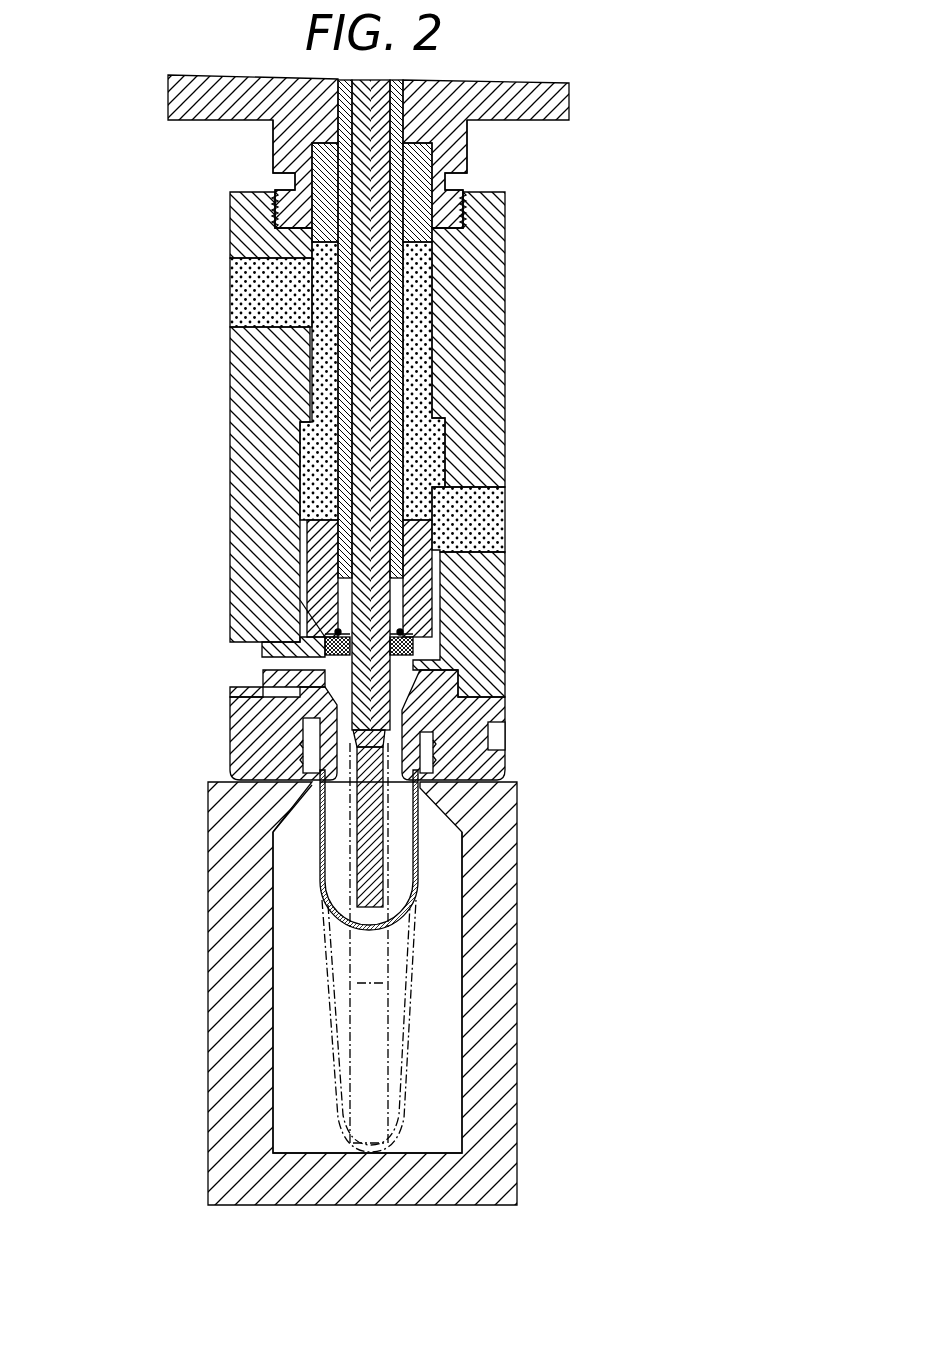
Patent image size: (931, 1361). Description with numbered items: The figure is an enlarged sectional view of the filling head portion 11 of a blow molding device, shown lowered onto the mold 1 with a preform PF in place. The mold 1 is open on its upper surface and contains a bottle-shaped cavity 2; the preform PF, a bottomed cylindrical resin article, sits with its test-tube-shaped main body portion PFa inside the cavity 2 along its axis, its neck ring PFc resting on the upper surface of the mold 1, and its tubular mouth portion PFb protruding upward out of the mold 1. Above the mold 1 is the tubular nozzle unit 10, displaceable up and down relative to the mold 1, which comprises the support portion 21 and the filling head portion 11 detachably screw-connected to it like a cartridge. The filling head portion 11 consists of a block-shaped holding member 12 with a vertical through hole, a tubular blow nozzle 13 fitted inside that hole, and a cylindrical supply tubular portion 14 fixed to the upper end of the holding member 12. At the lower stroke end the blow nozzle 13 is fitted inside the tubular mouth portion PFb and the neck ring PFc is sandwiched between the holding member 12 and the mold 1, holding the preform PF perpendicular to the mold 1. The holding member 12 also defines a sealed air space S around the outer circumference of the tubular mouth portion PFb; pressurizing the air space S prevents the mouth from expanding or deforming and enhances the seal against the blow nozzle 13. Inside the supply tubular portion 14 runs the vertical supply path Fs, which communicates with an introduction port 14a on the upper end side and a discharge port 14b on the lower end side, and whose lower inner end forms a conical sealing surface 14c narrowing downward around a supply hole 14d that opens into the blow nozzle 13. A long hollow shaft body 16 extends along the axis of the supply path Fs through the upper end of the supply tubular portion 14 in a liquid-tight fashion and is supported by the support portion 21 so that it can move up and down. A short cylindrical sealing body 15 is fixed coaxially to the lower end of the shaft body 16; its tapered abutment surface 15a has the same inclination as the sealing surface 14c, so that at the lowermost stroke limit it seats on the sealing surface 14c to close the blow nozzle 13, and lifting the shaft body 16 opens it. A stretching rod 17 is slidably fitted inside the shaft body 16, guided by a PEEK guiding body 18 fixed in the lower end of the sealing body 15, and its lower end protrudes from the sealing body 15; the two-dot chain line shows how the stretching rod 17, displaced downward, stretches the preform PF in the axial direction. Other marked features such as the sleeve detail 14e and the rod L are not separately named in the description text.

The mold 1 is at (487, 1092).
The cavity 2 is at (520, 1092).
The nozzle unit 10 is at (155, 365).
The filling head portion 11 is at (505, 383).
The holding member 12 is at (235, 772).
The blow nozzle 13 is at (263, 678).
The supply tubular portion 14 is at (258, 522).
The introduction port 14a is at (238, 300).
The discharge port 14b is at (495, 523).
The sealing surface 14c is at (405, 632).
The supply hole 14d is at (320, 642).
The sleeve flange 14e is at (242, 677).
The sealing body 15 is at (320, 560).
The abutment surface 15a is at (410, 640).
The shaft body 16 is at (338, 87).
The stretching rod 17 is at (339, 128).
The guiding body 18 is at (412, 650).
The support portion 21 is at (172, 97).
The plunger rod L is at (418, 262).
The supply path Fs is at (418, 410).
The air space S is at (433, 760).
The preform PF is at (489, 961).
The main body portion PFa is at (418, 843).
The tubular mouth portion PFb is at (433, 778).
The neck ring PFc is at (290, 792).